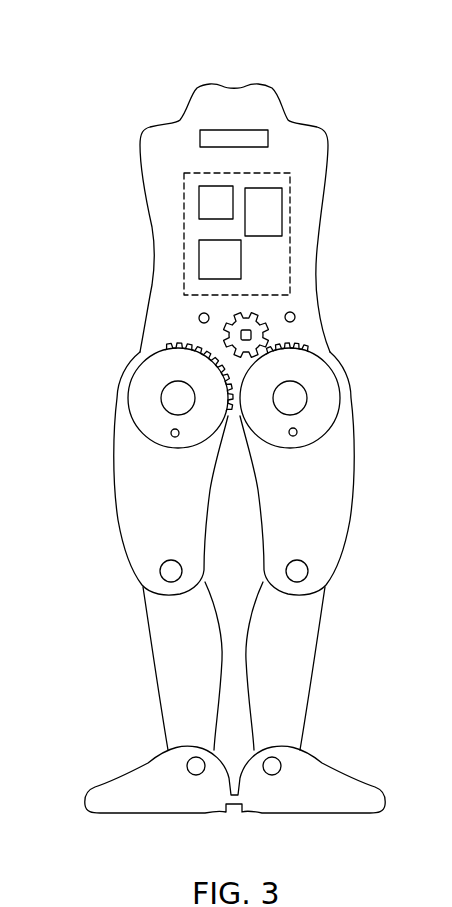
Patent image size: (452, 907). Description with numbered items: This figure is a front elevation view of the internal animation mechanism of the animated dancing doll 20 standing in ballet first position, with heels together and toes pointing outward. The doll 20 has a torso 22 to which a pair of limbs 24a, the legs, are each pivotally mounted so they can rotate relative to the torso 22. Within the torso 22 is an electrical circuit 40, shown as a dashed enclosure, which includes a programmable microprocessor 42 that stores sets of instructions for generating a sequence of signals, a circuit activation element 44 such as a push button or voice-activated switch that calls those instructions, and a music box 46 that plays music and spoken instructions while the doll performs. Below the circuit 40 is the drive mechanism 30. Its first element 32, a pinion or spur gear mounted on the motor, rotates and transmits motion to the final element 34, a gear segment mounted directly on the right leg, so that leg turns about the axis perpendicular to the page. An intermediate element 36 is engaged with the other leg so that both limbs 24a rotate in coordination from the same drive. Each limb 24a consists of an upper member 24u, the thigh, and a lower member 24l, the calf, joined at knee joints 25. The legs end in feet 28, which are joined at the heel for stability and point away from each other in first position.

The doll 20 is at (120, 63).
The torso 22 is at (143, 130).
The electrical circuit 40 is at (155, 200).
The microprocessor 42 is at (207, 208).
The circuit activation element 44 is at (211, 270).
The music box 46 is at (254, 222).
The drive mechanism 30 is at (350, 322).
The first element 32 is at (265, 322).
The final element 34 is at (140, 375).
The intermediate element 36 is at (325, 393).
The limbs 24a is at (97, 415).
The upper member 24u is at (115, 498).
The lower member 24l is at (153, 677).
The knee joints 25 is at (172, 570).
The feet 28 is at (376, 779).